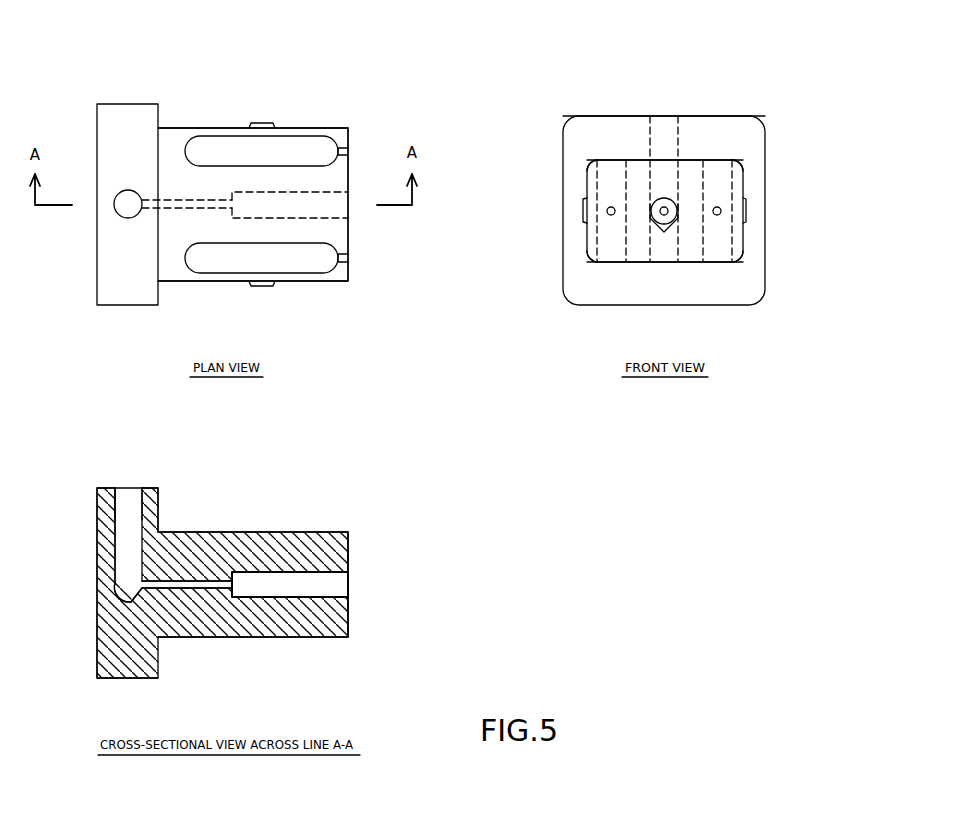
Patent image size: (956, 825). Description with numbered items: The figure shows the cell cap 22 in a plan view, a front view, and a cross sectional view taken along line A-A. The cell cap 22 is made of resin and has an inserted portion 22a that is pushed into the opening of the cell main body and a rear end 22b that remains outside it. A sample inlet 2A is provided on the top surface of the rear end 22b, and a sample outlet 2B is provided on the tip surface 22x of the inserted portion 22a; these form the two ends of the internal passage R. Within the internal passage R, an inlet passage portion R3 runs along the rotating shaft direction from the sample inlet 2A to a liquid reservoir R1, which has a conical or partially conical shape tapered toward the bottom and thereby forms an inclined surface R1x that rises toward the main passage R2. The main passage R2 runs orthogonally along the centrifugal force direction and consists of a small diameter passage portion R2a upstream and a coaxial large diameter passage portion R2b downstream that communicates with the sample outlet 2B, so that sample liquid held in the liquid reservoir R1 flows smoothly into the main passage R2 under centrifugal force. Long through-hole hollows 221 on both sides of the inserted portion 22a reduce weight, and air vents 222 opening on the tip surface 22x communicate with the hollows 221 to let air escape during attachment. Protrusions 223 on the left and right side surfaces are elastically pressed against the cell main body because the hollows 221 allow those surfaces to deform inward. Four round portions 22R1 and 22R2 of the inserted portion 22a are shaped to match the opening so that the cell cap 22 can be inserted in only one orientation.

The cell cap 22 is at (123, 53).
The inserted portion 22a is at (200, 128).
The rear end 22b is at (137, 104).
The hollows 221 is at (300, 152).
The air vents 222 is at (343, 147).
The protrusions 223 is at (262, 123).
The internal passage R is at (280, 216).
The liquid reservoir R1 is at (122, 602).
The inclined surface R1x is at (132, 600).
The main passage R2 is at (210, 686).
The small diameter passage portion R2a is at (192, 589).
The large diameter passage portion R2b is at (292, 598).
The inlet passage portion R3 is at (113, 518).
The sample inlet 2A is at (130, 218).
The sample outlet 2B is at (668, 225).
The round portions 22R1 is at (595, 168).
The round portions 22R2 is at (591, 258).
The tip surface 22x is at (348, 552).